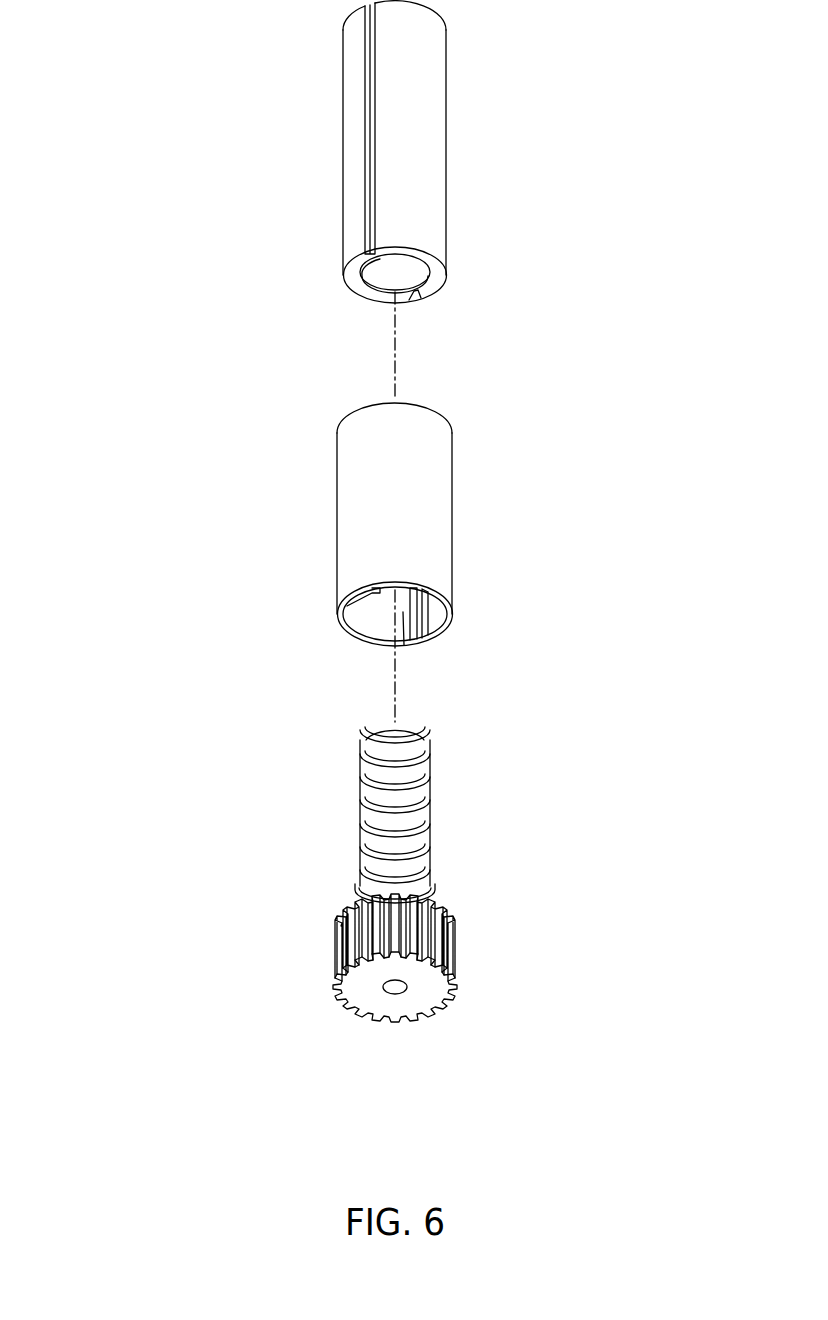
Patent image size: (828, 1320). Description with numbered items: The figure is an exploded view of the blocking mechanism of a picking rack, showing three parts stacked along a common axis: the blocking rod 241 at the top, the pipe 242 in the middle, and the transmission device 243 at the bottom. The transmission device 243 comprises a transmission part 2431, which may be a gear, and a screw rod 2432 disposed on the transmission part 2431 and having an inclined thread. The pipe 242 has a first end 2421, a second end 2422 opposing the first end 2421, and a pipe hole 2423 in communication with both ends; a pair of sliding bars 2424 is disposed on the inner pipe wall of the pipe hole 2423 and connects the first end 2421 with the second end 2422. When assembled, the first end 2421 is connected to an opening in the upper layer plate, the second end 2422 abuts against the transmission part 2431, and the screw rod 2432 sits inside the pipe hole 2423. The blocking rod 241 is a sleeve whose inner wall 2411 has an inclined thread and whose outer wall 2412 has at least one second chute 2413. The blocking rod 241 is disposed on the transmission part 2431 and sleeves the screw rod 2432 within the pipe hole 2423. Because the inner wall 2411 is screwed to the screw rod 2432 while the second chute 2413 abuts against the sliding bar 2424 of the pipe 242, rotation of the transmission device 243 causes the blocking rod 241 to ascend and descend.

The blocking rod 241 is at (372, 162).
The inner wall 2411 is at (410, 273).
The outer wall 2412 is at (432, 96).
The second chute 2413 is at (372, 108).
The pipe 242 is at (352, 531).
The first end 2421 is at (352, 416).
The second end 2422 is at (352, 633).
The pipe hole 2423 is at (404, 645).
The sliding bars 2424 is at (347, 606).
The transmission device 243 is at (353, 874).
The transmission part 2431 is at (436, 938).
The screw rod 2432 is at (413, 760).